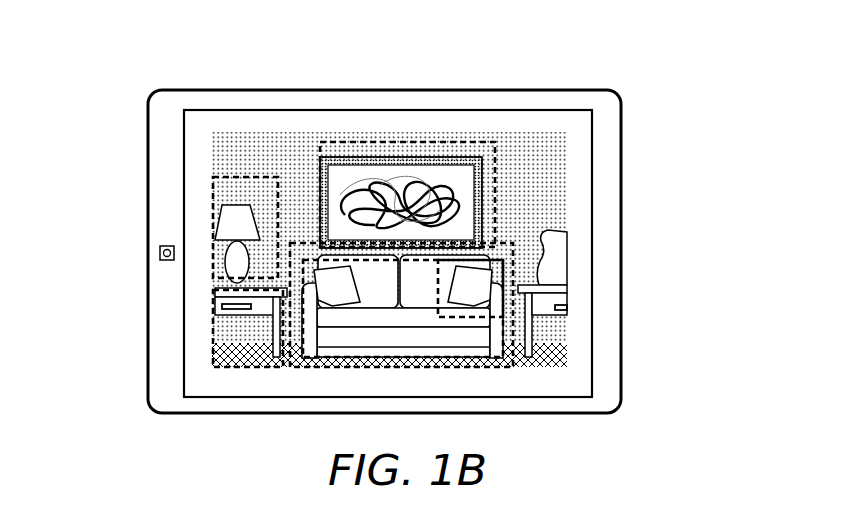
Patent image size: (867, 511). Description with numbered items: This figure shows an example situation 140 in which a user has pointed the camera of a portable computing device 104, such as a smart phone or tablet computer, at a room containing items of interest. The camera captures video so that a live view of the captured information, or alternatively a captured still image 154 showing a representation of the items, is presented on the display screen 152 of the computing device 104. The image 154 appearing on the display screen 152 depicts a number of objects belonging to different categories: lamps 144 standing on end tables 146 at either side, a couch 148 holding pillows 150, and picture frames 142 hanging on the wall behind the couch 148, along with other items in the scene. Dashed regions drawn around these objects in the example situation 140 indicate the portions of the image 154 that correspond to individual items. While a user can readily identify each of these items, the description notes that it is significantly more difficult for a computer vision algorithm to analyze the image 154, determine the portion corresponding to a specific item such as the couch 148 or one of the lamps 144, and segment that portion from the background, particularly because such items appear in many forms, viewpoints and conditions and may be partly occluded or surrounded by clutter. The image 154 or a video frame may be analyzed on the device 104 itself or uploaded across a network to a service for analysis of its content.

The portable computing device 104 is at (159, 92).
The example situation 140 is at (673, 94).
The picture frames 142 is at (320, 142).
The lamps 144 is at (228, 178).
The end tables 146 is at (210, 330).
The couch 148 is at (490, 357).
The pillows 150 is at (520, 330).
The display screen 152 is at (567, 217).
The still image 154 is at (540, 150).